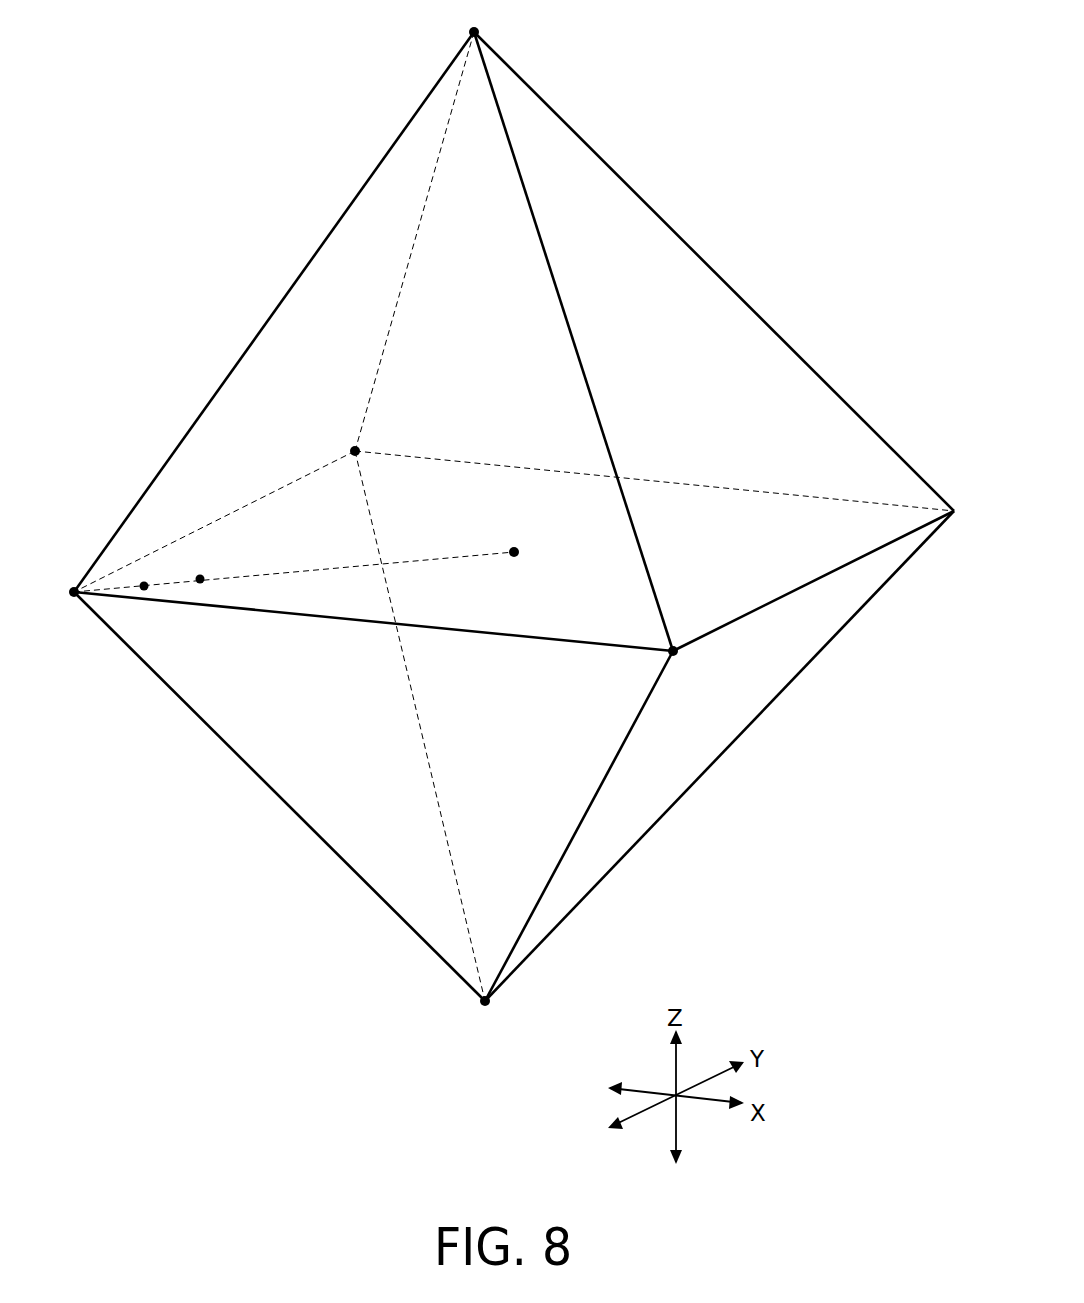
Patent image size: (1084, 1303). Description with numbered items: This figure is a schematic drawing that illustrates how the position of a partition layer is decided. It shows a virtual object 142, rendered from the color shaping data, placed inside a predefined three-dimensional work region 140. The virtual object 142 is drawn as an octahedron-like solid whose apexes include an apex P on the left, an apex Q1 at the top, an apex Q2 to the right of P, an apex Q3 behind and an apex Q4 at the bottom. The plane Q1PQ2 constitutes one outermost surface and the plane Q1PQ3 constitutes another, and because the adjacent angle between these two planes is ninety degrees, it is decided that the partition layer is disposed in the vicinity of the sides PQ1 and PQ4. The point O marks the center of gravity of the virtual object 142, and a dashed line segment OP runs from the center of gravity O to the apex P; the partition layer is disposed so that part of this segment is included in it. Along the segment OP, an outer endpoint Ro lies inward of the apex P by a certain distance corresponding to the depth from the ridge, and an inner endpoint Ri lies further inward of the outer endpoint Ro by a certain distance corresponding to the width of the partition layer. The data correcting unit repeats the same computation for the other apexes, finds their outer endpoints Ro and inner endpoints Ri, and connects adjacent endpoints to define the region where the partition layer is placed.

The three-dimensional work region 140 is at (262, 50).
The virtual object 142 is at (676, 227).
The apex Q1 is at (475, 19).
The apex Q2 is at (697, 664).
The apex Q3 is at (328, 439).
The apex Q4 is at (488, 1019).
The apex P is at (59, 594).
The center of gravity O is at (513, 534).
The outer endpoint Ro is at (147, 582).
The inner endpoint Ri is at (203, 582).